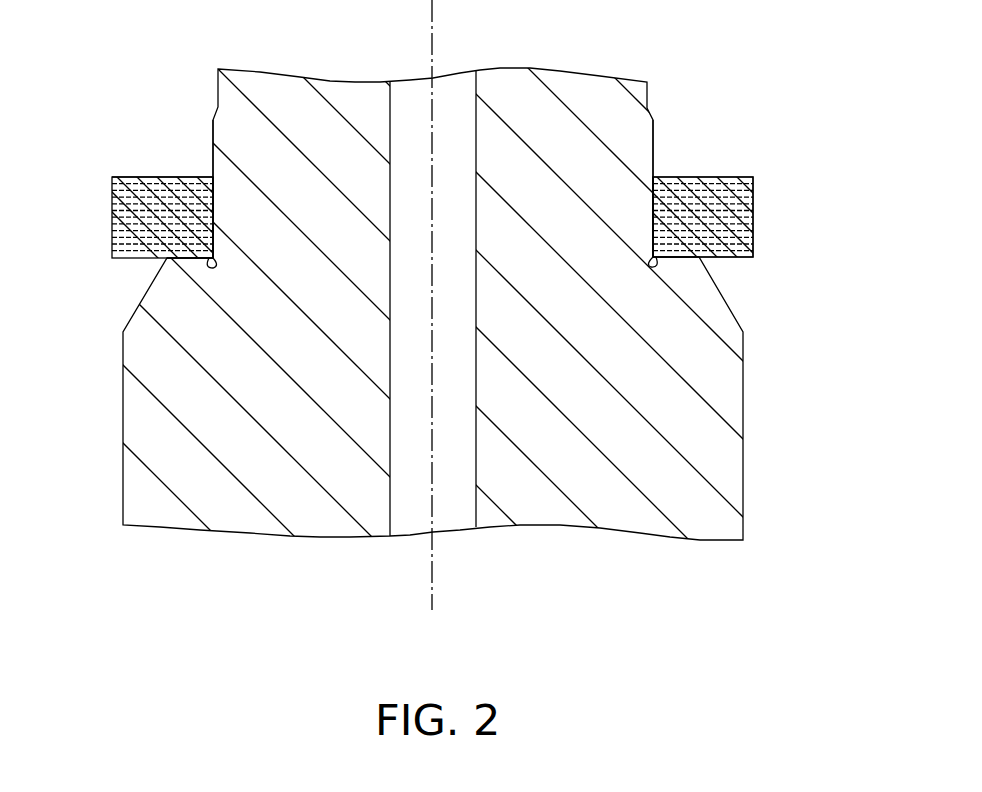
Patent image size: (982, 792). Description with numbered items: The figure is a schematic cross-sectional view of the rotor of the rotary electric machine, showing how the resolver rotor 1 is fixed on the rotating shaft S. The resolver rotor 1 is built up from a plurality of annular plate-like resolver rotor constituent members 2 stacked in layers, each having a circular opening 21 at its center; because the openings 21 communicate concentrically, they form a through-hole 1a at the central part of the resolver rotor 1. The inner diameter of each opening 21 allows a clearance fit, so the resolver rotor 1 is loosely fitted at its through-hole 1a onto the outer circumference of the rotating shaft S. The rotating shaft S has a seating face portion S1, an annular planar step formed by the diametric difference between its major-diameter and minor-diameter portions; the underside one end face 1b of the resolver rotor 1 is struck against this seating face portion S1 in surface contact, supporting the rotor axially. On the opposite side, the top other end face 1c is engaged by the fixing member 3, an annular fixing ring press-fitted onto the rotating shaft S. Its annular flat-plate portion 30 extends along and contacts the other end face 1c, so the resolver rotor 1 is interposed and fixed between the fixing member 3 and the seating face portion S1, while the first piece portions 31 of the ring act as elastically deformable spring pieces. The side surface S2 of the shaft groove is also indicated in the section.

The resolver rotor 1 is at (764, 169).
The through-hole 1a is at (647, 241).
The one end face 1b is at (168, 262).
The other end face 1c is at (113, 176).
The resolver rotor constituent member 2 is at (753, 255).
The opening 21 is at (652, 196).
The fixing member 3 is at (700, 177).
The flat-plate portion 30 is at (143, 176).
The first piece portion 31 is at (205, 176).
The rotating shaft S is at (577, 77).
The seating face portion S1 is at (172, 176).
The groove side surface S2 is at (212, 170).